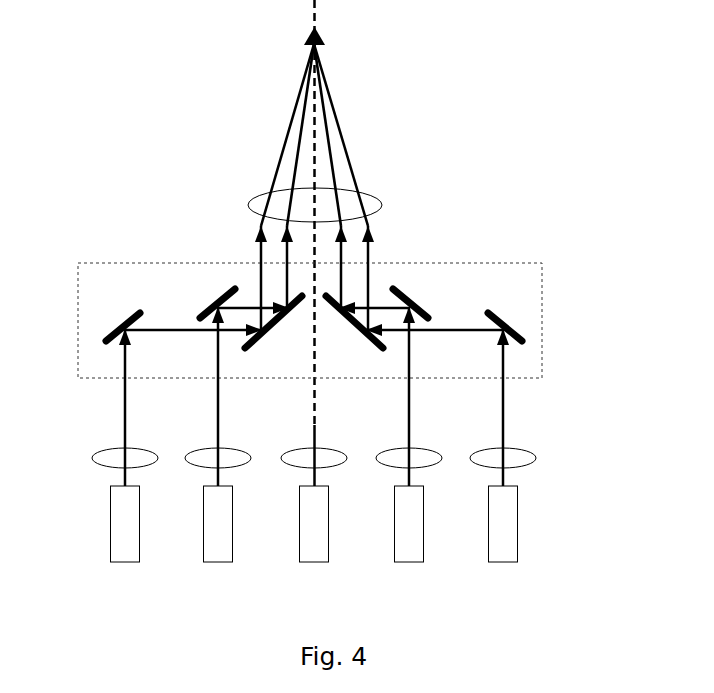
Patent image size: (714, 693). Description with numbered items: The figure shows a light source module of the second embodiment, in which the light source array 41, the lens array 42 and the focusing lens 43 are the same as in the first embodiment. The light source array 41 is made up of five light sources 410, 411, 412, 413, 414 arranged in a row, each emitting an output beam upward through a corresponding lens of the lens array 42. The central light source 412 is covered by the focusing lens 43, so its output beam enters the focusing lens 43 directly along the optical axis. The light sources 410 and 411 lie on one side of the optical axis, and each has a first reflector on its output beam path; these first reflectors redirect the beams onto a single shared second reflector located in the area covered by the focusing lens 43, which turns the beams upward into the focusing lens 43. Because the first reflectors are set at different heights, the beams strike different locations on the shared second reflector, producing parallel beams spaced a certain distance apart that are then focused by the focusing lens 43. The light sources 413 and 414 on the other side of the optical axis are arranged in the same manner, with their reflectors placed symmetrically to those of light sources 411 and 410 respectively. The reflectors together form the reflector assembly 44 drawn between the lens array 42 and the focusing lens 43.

The light source array 41 is at (517, 528).
The lens array 42 is at (534, 456).
The focusing lens 43 is at (382, 205).
The beam combining mirror assembly 44 is at (542, 318).
The light source 410 is at (125, 562).
The light source 411 is at (218, 562).
The light source 412 is at (314, 562).
The light source 413 is at (409, 562).
The light source 414 is at (544, 484).